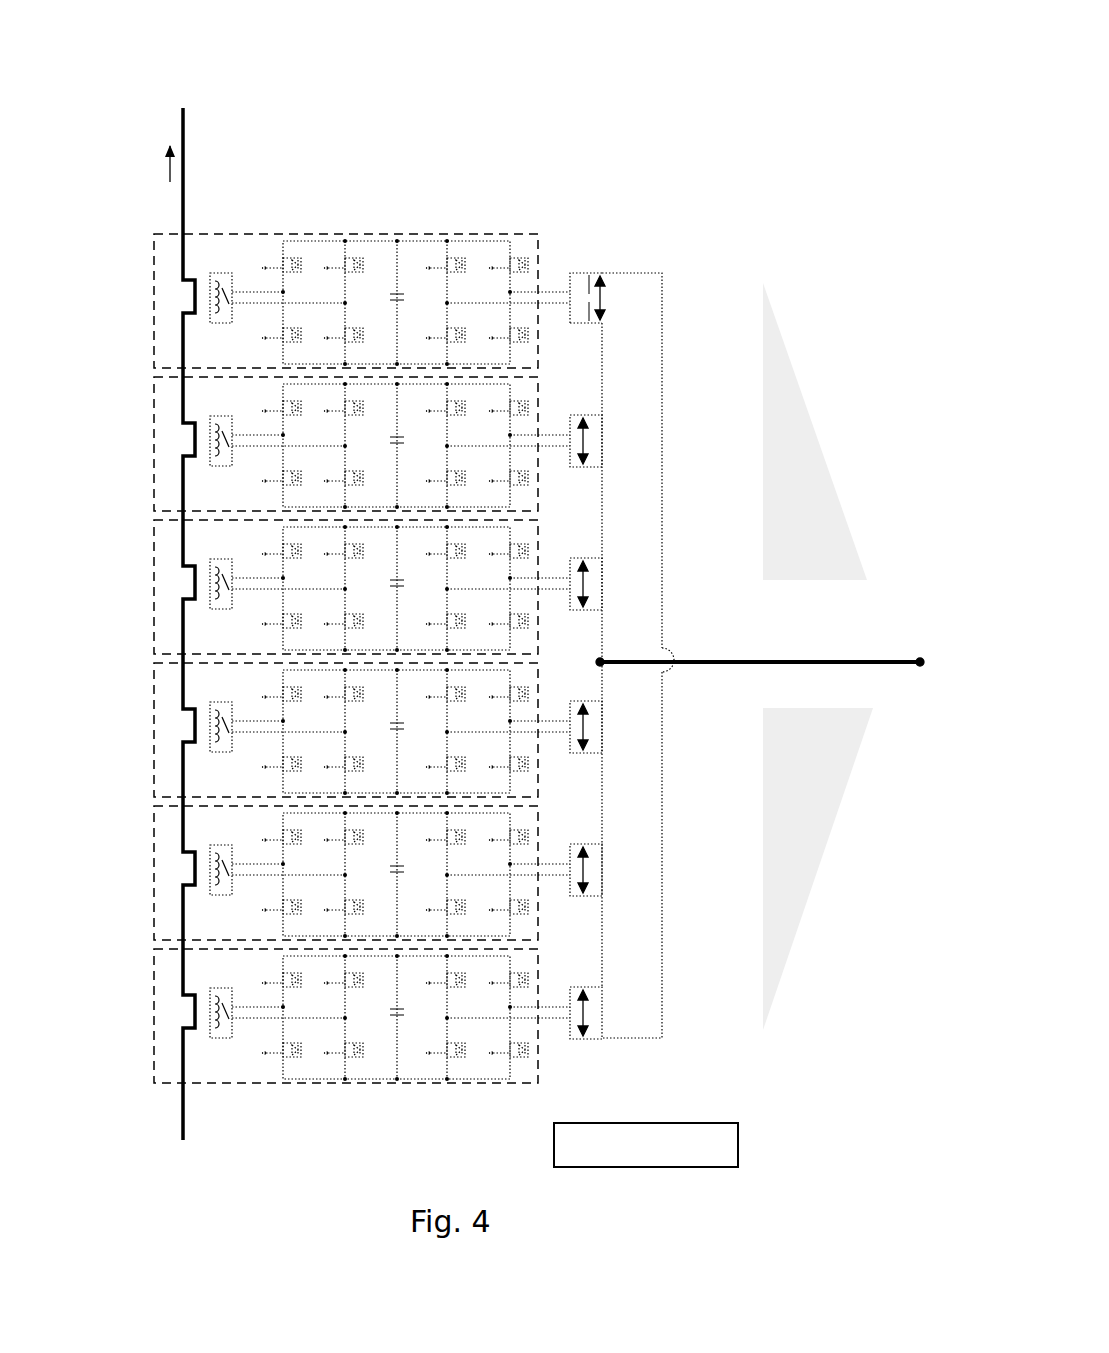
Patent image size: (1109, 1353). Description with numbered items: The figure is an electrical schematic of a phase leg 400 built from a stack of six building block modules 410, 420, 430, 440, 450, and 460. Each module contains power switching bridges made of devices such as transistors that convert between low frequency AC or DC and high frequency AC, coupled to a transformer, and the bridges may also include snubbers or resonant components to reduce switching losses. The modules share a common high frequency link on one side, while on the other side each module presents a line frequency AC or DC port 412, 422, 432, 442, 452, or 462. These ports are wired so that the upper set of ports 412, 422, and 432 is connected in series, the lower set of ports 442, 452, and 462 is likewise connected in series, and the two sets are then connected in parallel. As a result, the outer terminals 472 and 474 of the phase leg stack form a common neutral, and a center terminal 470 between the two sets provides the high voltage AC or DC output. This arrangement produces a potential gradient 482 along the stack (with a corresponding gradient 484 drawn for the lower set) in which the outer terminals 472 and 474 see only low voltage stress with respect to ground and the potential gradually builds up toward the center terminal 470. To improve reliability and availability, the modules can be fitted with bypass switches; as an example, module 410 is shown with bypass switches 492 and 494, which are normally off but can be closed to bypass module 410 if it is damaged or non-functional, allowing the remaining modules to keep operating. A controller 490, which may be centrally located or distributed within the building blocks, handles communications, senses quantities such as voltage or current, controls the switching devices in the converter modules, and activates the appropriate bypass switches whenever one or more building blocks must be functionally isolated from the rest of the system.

The phase leg 400 is at (394, 76).
The module 410 is at (321, 275).
The module 420 is at (148, 462).
The module 430 is at (148, 585).
The module 440 is at (148, 723).
The module 450 is at (148, 858).
The module 460 is at (148, 1007).
The line frequency AC or DC port 412 is at (632, 254).
The line frequency AC or DC port 422 is at (596, 445).
The line frequency AC or DC port 432 is at (596, 584).
The line frequency AC or DC port 442 is at (596, 725).
The line frequency AC or DC port 452 is at (596, 868).
The line frequency AC or DC port 462 is at (596, 1012).
The center terminal 470 is at (887, 672).
The outer terminal 472 is at (668, 293).
The outer terminal 474 is at (668, 1030).
The potential gradient 482 is at (806, 388).
The lower potential gradient 484 is at (822, 873).
The controller 490 is at (750, 1158).
The bypass switch 492 is at (580, 290).
The bypass switch 494 is at (229, 253).